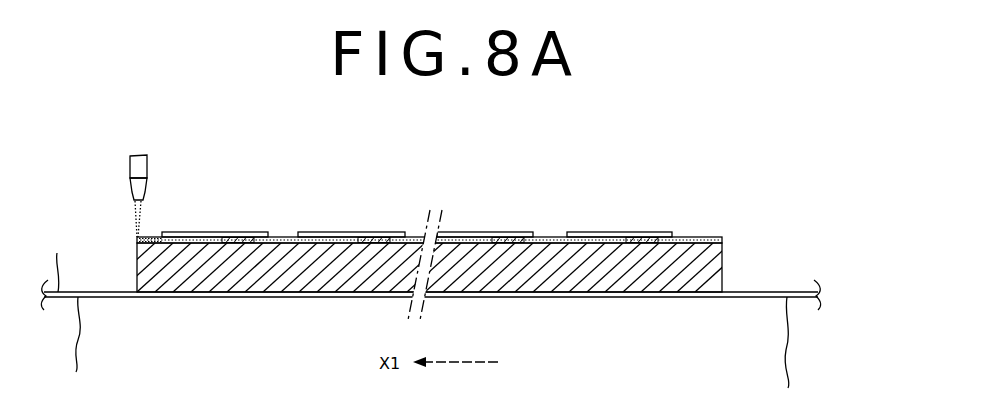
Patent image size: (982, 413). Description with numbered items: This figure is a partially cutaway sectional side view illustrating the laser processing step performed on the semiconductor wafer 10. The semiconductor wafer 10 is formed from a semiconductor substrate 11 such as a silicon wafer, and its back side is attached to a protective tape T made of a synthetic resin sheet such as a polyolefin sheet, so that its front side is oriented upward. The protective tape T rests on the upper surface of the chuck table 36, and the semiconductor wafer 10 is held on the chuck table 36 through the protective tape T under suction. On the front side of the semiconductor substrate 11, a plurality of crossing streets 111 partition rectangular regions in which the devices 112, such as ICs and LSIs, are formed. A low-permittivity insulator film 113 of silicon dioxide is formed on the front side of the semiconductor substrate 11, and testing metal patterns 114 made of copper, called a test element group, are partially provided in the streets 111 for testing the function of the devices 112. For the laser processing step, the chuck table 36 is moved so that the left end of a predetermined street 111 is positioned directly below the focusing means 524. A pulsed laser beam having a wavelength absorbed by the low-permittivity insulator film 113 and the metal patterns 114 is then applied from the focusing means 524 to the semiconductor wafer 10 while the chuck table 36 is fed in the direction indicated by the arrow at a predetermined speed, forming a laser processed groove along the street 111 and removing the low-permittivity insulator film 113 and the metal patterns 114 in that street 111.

The semiconductor wafer 10 is at (714, 220).
The semiconductor substrate 11 is at (723, 270).
The streets 111 is at (728, 245).
The devices 112 is at (203, 232).
The low-permittivity insulator film 113 is at (148, 237).
The testing metal patterns 114 is at (237, 237).
The focusing means 524 is at (147, 165).
The chuck table 36 is at (800, 358).
The protective tape T is at (56, 264).